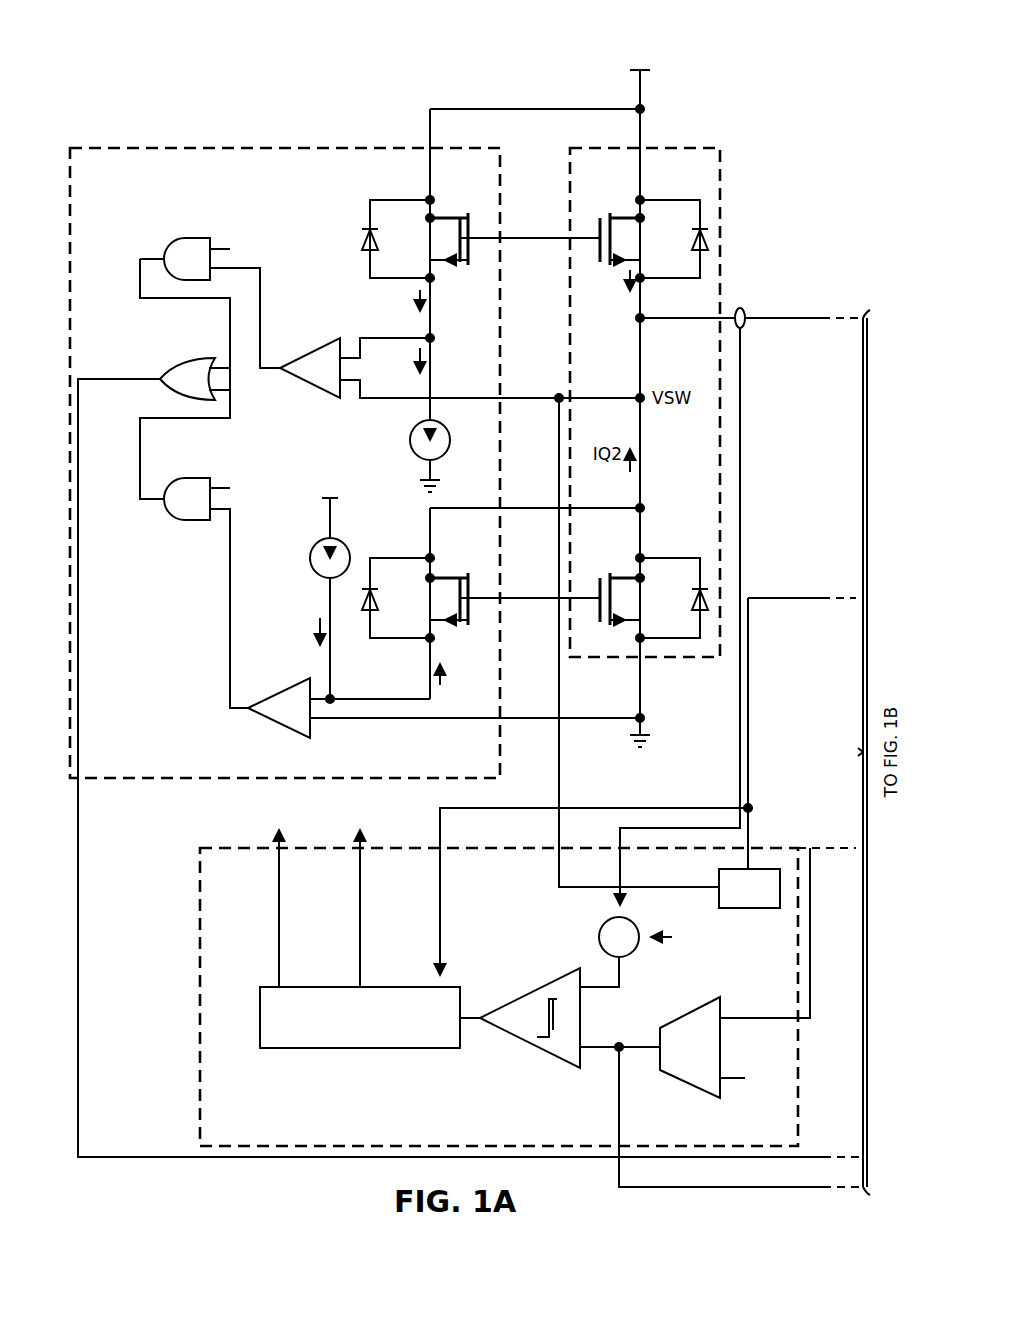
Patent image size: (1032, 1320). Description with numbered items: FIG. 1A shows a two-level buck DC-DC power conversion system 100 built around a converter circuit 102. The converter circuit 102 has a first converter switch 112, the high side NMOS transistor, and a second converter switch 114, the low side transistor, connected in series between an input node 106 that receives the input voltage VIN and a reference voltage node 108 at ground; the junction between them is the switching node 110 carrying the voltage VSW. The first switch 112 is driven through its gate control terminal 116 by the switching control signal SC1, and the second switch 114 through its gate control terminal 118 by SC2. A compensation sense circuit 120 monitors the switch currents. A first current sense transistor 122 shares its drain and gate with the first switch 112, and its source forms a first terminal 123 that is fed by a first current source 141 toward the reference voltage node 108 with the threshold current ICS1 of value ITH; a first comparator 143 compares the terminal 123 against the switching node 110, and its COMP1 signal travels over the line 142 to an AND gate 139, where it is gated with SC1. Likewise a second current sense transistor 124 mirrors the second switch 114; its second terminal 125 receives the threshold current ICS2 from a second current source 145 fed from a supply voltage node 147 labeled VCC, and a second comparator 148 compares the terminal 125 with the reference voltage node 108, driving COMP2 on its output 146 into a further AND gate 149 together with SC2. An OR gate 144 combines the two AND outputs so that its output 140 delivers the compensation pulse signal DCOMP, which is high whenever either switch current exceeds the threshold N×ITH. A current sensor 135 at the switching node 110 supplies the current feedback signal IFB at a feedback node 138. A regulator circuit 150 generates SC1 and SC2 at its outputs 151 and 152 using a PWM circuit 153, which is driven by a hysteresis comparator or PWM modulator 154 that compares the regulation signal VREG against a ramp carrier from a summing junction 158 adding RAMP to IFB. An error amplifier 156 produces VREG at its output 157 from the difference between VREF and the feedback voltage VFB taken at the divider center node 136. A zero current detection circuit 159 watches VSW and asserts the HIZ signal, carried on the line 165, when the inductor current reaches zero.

The power conversion system 100 is at (198, 78).
The converter circuit 102 is at (667, 146).
The input node 106 is at (638, 94).
The reference voltage node 108 is at (440, 478).
The switching node 110 is at (778, 322).
The first converter switch 112 is at (605, 226).
The second converter switch 114 is at (605, 582).
The gate control terminal 116 is at (532, 244).
The gate control terminal 118 is at (532, 605).
The compensation sense circuit 120 is at (283, 146).
The first current sense transistor 122 is at (476, 226).
The first terminal 123 is at (438, 368).
The second current sense transistor 124 is at (476, 582).
The second terminal 125 is at (380, 697).
The current sensor 135 is at (745, 308).
The center node 136 is at (814, 1022).
The feedback node 138 is at (742, 428).
The AND gate 139 is at (190, 237).
The output 140 is at (118, 386).
The first current source 141 is at (416, 456).
The COMP1 signal line 142 is at (262, 290).
The first comparator 143 is at (308, 390).
The OR gate 144 is at (190, 357).
The second current source 145 is at (318, 575).
The output 146 is at (228, 642).
The supply voltage node 147 is at (333, 520).
The second comparator 148 is at (280, 728).
The AND gate 149 is at (190, 477).
The regulator circuit 150 is at (198, 998).
The first regulator output 151 is at (270, 922).
The second regulator output 152 is at (350, 922).
The PWM circuit 153 is at (350, 1050).
The PWM modulator 154 is at (528, 1048).
The error amplifier 156 is at (700, 1098).
The output 157 is at (612, 1052).
The summing junction 158 is at (630, 958).
The zero current detection circuit 159 is at (748, 910).
The HIZ signal line 165 is at (752, 724).